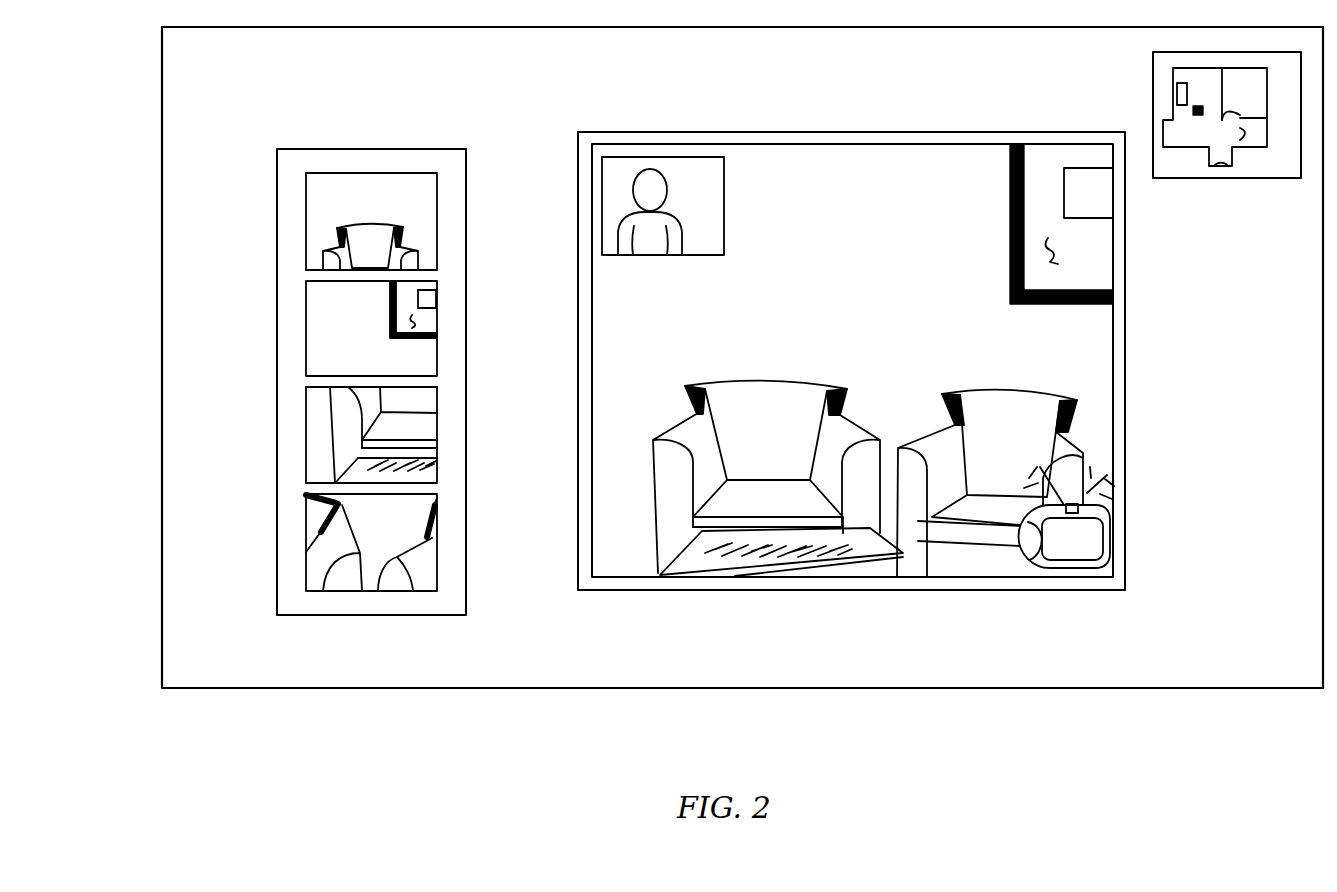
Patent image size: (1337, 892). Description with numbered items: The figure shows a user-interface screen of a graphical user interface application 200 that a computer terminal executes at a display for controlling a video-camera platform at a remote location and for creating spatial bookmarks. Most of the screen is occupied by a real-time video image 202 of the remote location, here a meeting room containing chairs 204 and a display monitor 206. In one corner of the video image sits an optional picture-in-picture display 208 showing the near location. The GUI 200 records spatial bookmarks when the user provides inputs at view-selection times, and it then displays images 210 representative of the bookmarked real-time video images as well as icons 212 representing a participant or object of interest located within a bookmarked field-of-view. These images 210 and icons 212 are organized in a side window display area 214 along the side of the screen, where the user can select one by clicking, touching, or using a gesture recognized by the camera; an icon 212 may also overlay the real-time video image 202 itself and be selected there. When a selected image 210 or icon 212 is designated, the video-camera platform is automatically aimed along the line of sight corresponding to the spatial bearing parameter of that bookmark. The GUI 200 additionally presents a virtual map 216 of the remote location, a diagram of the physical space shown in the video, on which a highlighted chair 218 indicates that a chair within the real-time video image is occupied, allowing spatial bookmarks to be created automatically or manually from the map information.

The graphical user interface application 200 is at (740, 688).
The real-time video image 202 is at (1113, 363).
The chairs 204 is at (766, 380).
The display monitor 206 is at (1097, 250).
The picture-in-picture display 208 is at (724, 205).
The images 210 is at (437, 330).
The icons 212 is at (437, 223).
The side window display area 214 is at (372, 149).
The virtual map 216 is at (1245, 178).
The highlighted chair 218 is at (1193, 110).